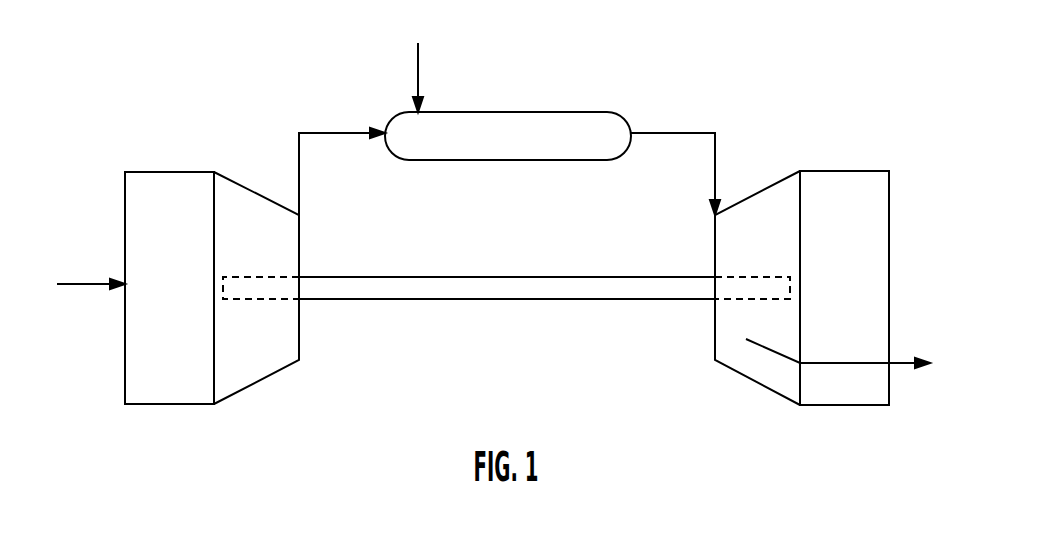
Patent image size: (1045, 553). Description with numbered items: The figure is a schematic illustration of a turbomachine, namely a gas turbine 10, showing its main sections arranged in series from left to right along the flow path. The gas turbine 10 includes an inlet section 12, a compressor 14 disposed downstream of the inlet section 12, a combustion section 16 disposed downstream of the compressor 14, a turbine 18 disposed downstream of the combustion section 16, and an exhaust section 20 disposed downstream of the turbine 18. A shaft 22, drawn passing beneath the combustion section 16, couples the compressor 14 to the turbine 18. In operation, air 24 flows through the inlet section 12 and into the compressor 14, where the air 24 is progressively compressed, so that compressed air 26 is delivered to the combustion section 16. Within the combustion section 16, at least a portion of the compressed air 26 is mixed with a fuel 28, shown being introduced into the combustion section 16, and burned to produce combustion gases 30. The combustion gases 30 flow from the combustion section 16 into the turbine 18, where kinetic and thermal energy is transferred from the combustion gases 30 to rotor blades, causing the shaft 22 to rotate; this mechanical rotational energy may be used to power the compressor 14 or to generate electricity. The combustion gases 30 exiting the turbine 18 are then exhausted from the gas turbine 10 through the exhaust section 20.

The gas turbine 10 is at (375, 33).
The inlet section 12 is at (143, 172).
The compressor 14 is at (246, 182).
The combustion section 16 is at (565, 112).
The turbine 18 is at (785, 177).
The exhaust section 20 is at (865, 171).
The shaft 22 is at (457, 300).
The air 24 is at (72, 283).
The compressed air 26 is at (329, 132).
The fuel 28 is at (420, 77).
The combustion gases 30 is at (661, 135).